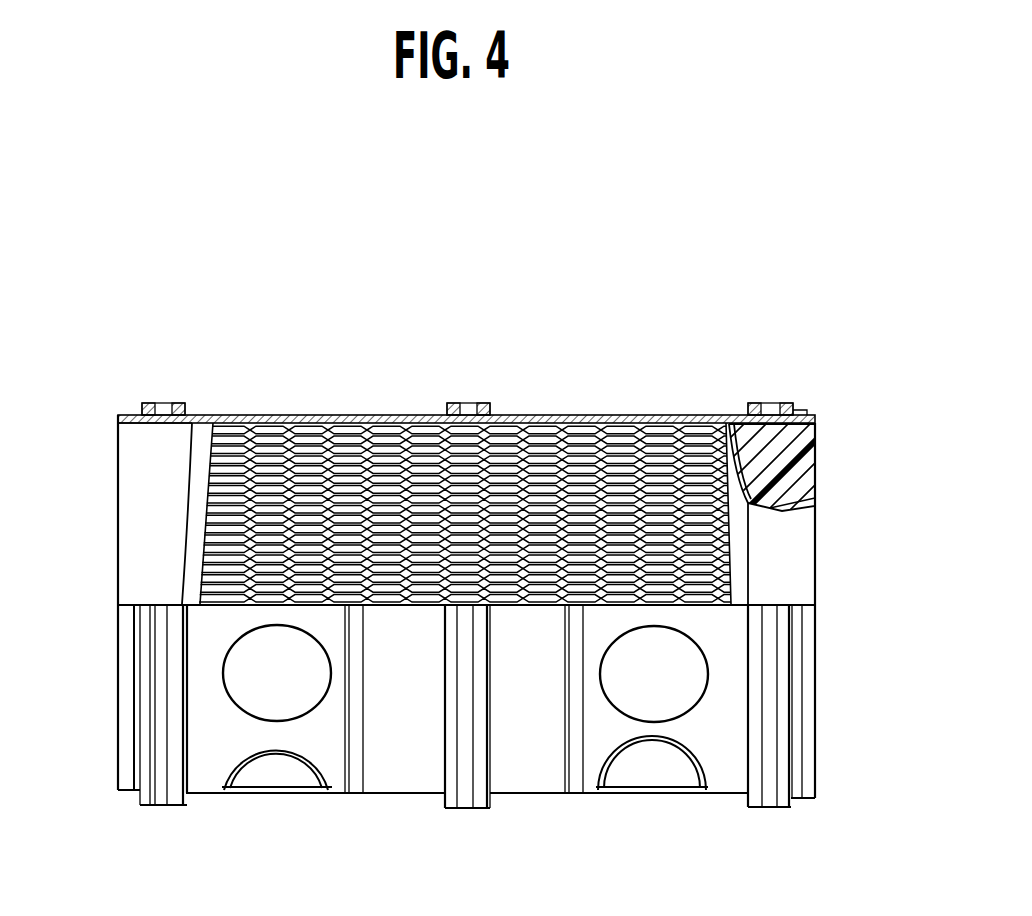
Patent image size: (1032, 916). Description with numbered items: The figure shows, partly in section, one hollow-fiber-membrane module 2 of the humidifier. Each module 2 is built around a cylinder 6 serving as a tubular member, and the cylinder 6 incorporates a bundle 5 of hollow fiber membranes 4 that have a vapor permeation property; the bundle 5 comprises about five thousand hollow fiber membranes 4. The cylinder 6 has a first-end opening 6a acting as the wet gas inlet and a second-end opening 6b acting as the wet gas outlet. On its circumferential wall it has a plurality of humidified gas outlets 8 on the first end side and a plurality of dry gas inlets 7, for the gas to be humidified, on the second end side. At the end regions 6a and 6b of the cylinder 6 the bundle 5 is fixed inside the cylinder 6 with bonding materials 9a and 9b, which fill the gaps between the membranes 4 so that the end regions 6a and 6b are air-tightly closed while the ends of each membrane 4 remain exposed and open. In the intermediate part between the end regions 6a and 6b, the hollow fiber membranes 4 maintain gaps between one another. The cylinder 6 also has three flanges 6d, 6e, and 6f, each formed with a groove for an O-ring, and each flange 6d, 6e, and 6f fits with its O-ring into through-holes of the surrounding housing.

The module 2 is at (404, 412).
The hollow fiber membranes 4 is at (582, 418).
The hollow fiber membrane bundle 5 is at (642, 413).
The cylinder 6 is at (252, 413).
The first-end opening 6a is at (118, 508).
The second-end opening 6b is at (816, 556).
The flange 6d is at (176, 805).
The flange 6e is at (484, 809).
The flange 6f is at (782, 808).
The dry gas inlets 7 is at (627, 788).
The humidified gas outlets 8 is at (267, 788).
The bonding material 9a is at (817, 427).
The bonding material 9b is at (787, 467).